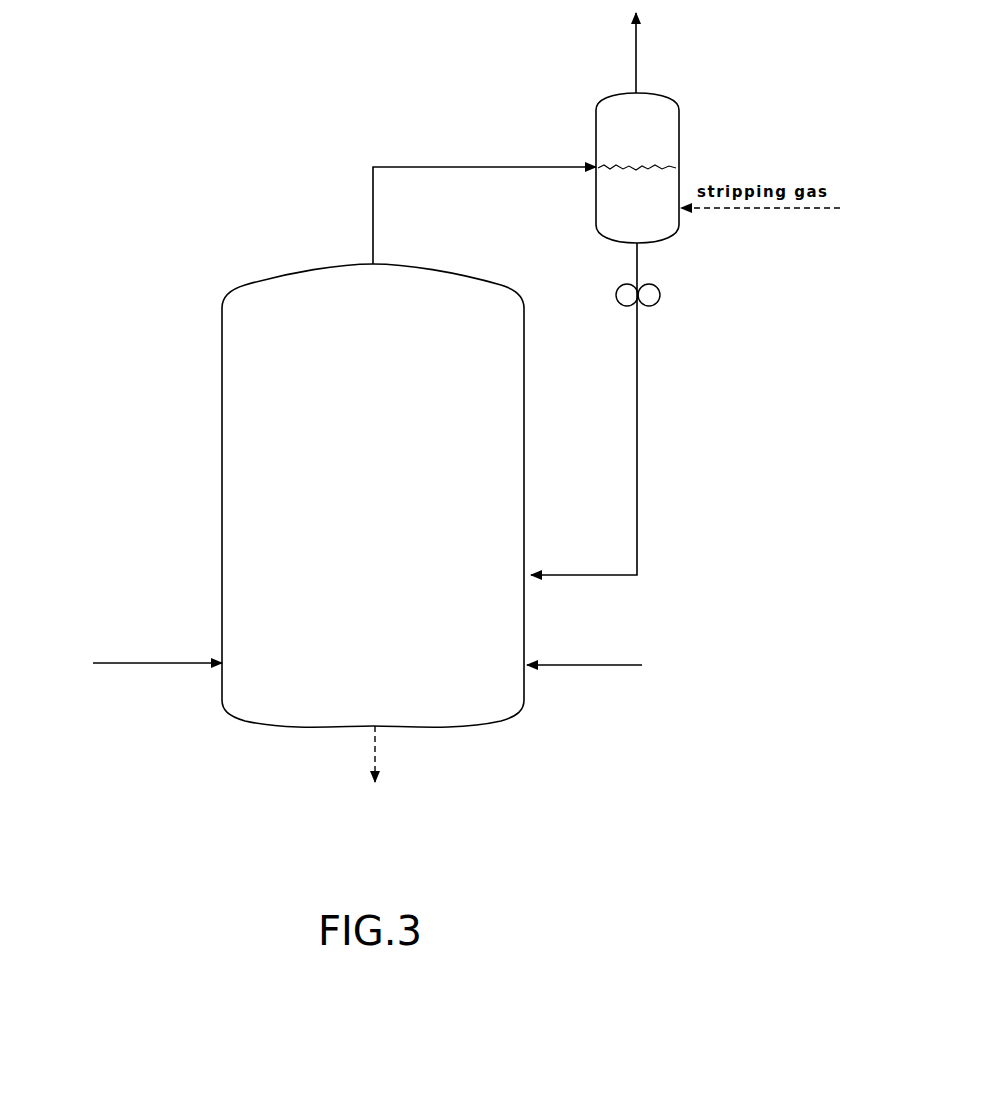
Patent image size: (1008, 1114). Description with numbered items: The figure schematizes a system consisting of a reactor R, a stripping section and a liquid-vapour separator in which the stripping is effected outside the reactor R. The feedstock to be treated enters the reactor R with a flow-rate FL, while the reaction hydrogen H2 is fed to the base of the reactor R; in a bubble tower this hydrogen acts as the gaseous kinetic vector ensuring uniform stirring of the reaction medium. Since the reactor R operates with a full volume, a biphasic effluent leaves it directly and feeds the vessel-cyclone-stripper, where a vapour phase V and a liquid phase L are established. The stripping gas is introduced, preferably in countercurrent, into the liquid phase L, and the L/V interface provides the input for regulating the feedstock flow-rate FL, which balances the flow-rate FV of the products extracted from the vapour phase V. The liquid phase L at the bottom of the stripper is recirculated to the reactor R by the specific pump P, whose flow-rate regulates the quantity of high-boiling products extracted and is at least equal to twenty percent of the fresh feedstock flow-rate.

The reactor R is at (373, 495).
The vapour phase V is at (637, 168).
The liquid phase L is at (637, 195).
The pump P is at (609, 409).
The flow-rate of the products extracted from the vapour phase FV is at (653, 53).
The flow-rate of the feedstock to be treated FL is at (157, 647).
The hydrogen H2 is at (584, 650).